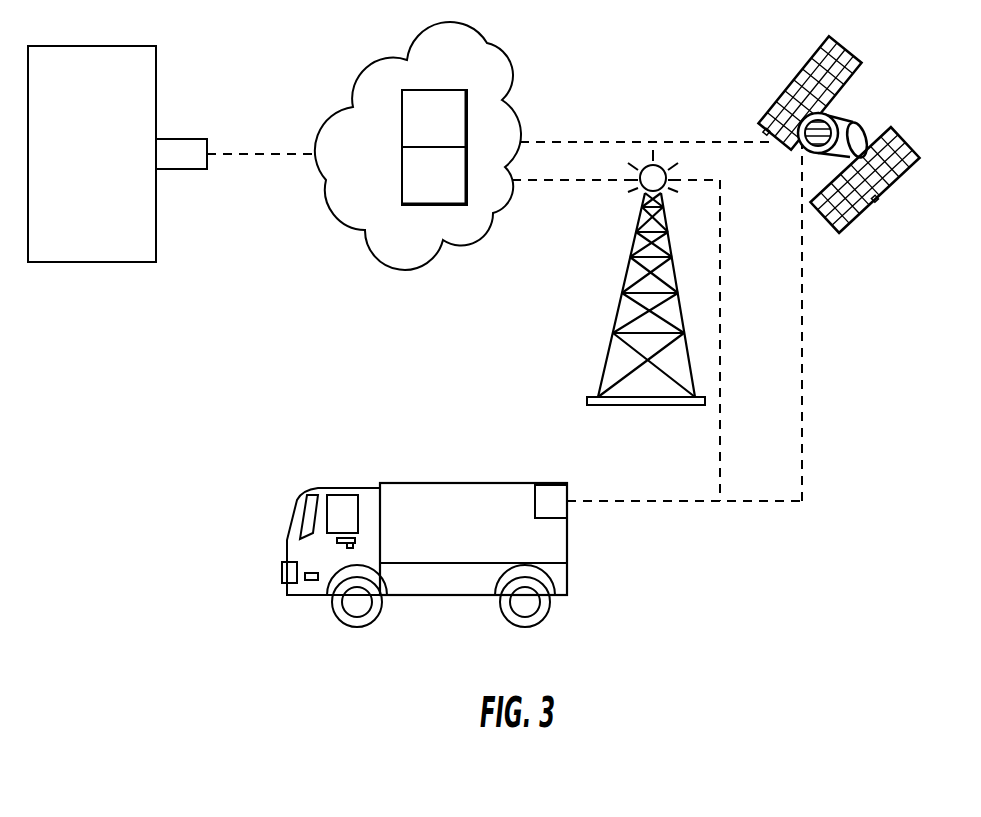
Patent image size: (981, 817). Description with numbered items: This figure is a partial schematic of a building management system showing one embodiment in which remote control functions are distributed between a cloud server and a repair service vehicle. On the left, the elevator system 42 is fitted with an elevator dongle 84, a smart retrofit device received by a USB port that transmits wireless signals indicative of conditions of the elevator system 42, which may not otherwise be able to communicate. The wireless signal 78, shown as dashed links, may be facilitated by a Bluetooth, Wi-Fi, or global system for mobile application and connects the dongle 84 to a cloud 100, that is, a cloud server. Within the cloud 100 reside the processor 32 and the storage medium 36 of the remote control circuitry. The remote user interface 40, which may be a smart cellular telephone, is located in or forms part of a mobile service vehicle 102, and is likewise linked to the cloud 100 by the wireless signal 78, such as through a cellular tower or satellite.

The elevator system 42 is at (113, 46).
The elevator dongle 84 is at (191, 139).
The wireless signal 78 is at (293, 157).
The cloud 100 is at (379, 57).
The processor 32 is at (434, 147).
The storage medium 36 is at (434, 176).
The mobile service vehicle 102 is at (450, 483).
The user interface 40 is at (550, 493).